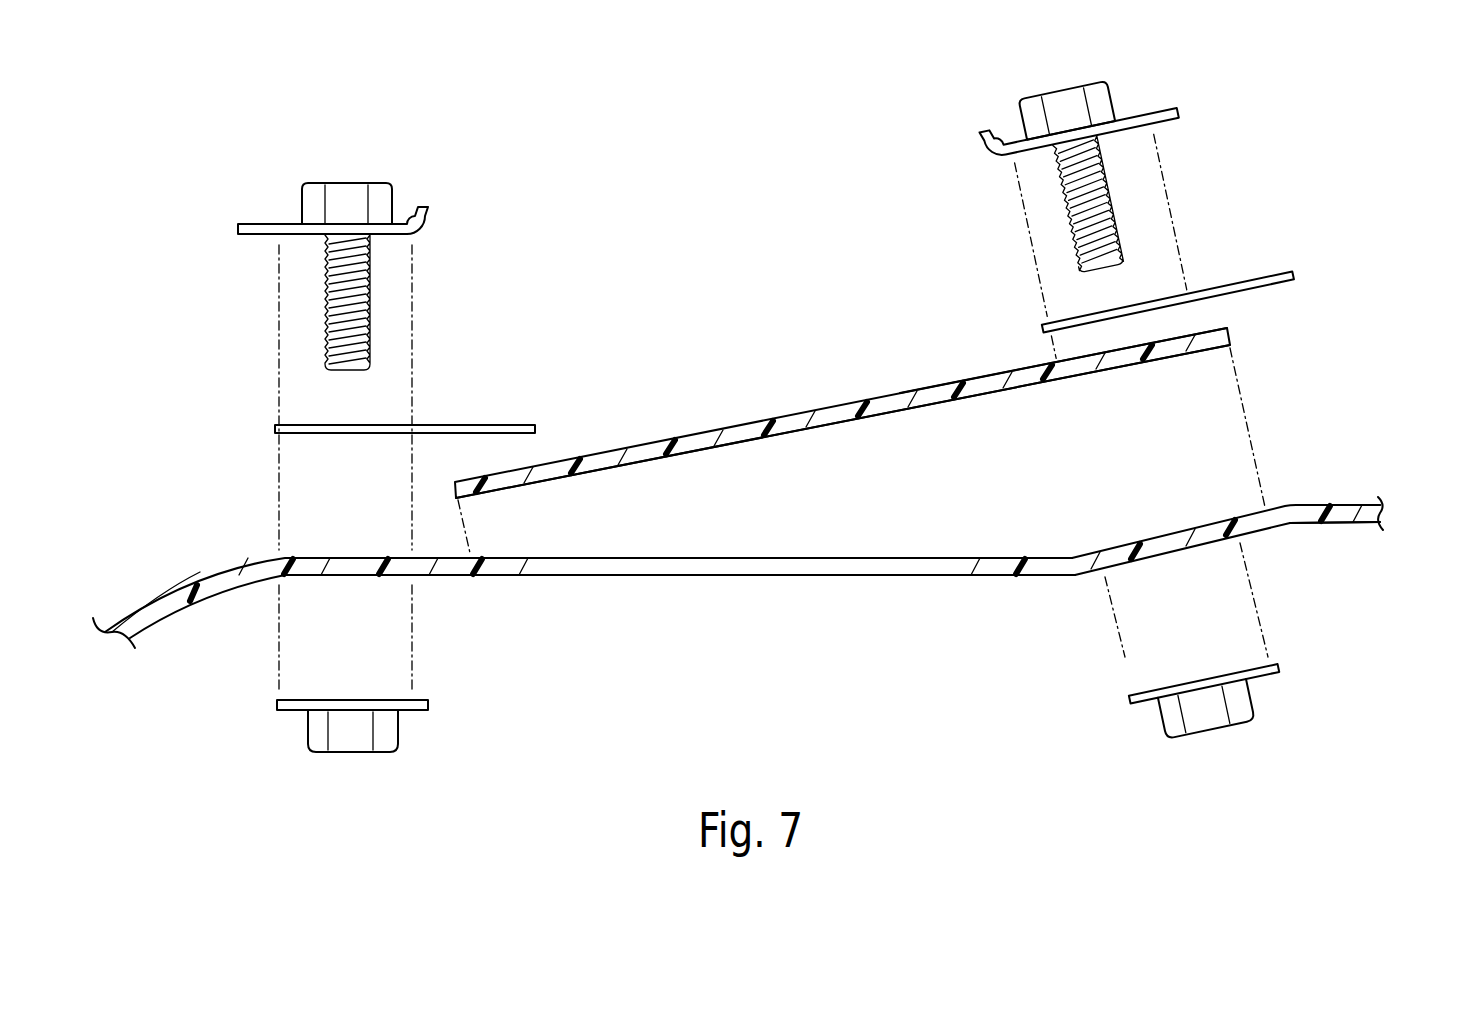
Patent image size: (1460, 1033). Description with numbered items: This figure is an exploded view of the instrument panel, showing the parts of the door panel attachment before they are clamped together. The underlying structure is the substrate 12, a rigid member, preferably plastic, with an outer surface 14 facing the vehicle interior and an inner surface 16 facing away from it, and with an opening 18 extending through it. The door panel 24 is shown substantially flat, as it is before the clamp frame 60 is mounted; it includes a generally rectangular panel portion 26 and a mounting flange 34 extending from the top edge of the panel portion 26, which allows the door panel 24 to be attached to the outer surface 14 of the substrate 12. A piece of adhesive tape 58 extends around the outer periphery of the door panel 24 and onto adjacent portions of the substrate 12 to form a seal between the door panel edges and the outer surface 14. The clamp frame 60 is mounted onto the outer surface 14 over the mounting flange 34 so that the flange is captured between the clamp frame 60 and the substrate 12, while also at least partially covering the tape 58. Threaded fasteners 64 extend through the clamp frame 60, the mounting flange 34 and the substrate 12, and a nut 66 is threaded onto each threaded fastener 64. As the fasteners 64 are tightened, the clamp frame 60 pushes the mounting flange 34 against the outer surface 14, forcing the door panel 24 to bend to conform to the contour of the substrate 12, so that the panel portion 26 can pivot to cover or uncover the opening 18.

The substrate 12 is at (1357, 522).
The outer surface 14 is at (1323, 504).
The inner surface 16 is at (1307, 525).
The opening 18 is at (770, 568).
The door panel 24 is at (900, 376).
The panel portion 26 is at (745, 433).
The mounting flange 34 is at (1125, 358).
The adhesive tape 58 is at (465, 425).
The clamp frame 60 is at (402, 223).
The threaded fastener 64 is at (343, 200).
The nut 66 is at (320, 733).